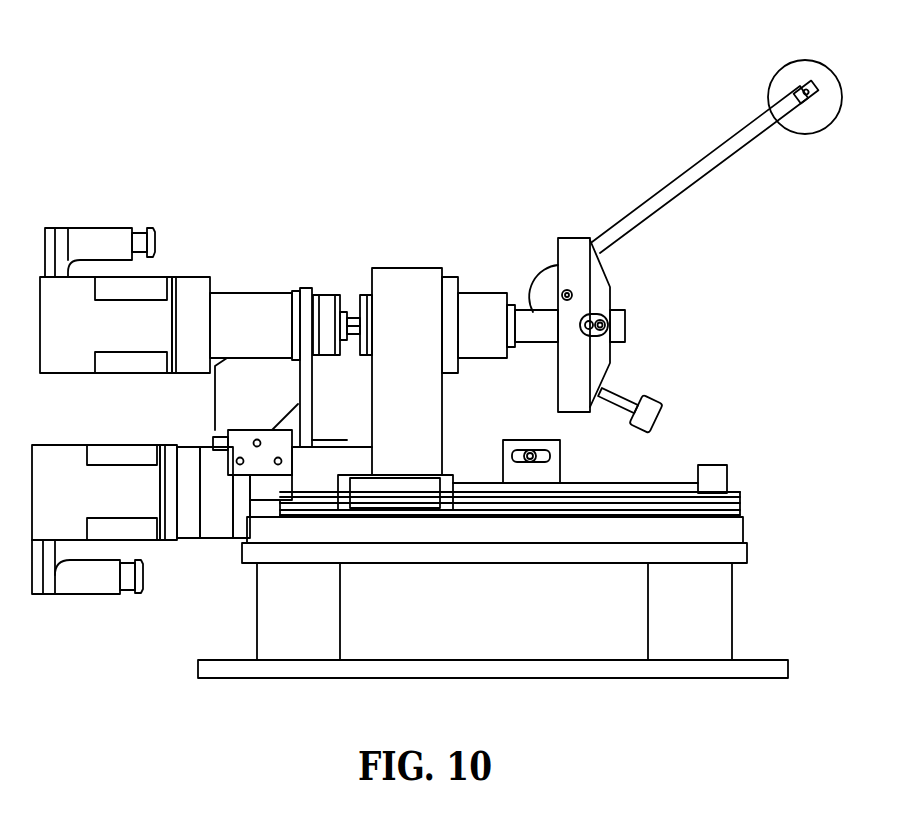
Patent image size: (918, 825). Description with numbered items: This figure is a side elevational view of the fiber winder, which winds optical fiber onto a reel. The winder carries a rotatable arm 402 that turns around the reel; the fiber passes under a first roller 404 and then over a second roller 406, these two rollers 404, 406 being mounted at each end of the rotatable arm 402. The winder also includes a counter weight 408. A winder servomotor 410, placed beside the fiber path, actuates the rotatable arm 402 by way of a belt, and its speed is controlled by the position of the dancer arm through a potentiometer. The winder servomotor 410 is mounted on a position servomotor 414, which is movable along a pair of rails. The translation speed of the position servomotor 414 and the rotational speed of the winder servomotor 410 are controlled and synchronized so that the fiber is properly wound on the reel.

The rotatable arm 402 is at (690, 172).
The first roller 404 is at (543, 267).
The second roller 406 is at (787, 70).
The counter weight 408 is at (645, 413).
The winder servomotor 410 is at (278, 293).
The position servomotor 414 is at (200, 527).